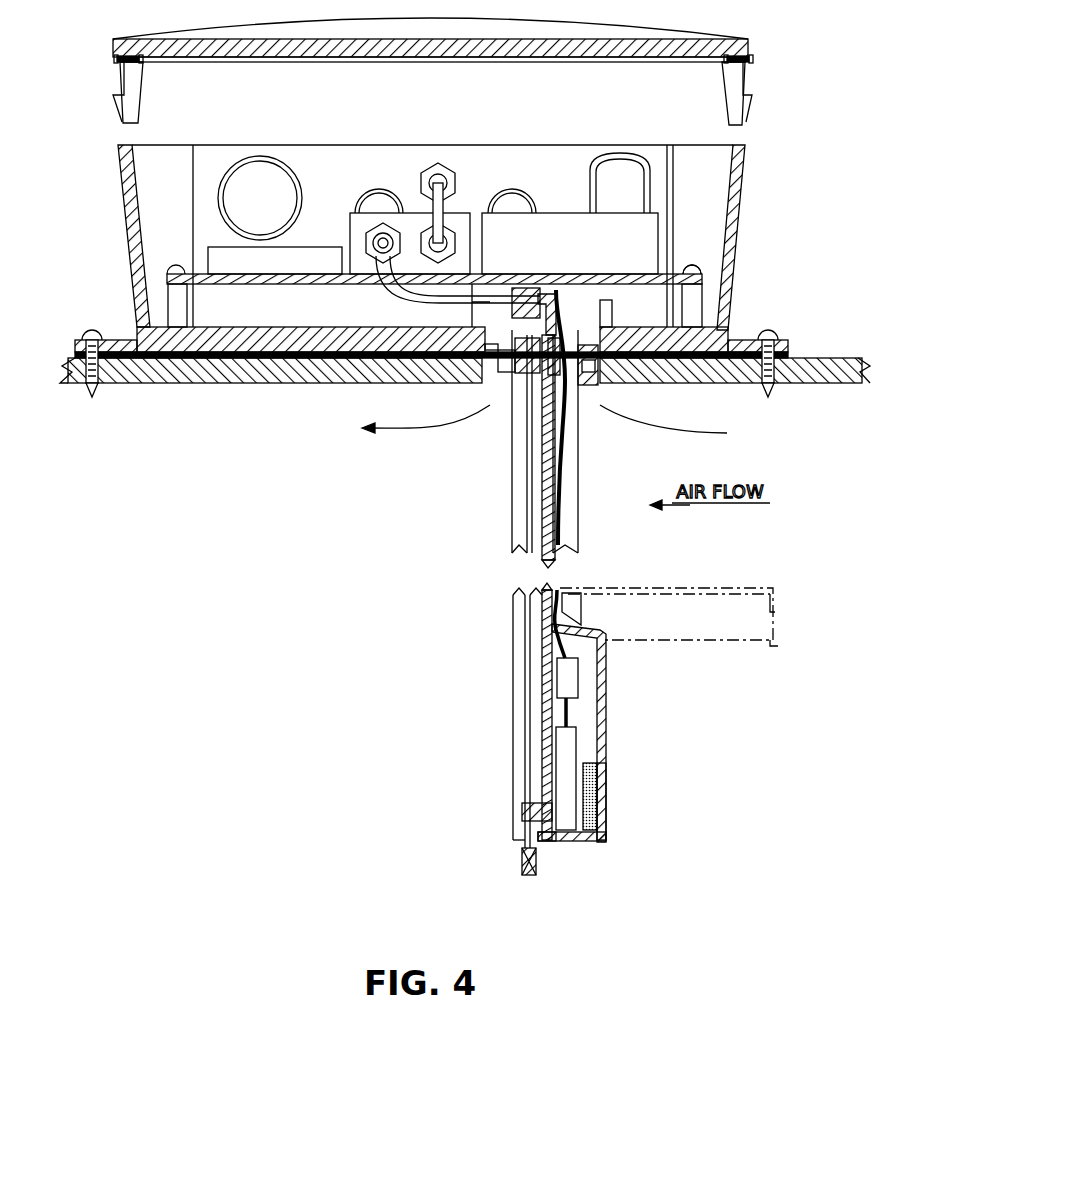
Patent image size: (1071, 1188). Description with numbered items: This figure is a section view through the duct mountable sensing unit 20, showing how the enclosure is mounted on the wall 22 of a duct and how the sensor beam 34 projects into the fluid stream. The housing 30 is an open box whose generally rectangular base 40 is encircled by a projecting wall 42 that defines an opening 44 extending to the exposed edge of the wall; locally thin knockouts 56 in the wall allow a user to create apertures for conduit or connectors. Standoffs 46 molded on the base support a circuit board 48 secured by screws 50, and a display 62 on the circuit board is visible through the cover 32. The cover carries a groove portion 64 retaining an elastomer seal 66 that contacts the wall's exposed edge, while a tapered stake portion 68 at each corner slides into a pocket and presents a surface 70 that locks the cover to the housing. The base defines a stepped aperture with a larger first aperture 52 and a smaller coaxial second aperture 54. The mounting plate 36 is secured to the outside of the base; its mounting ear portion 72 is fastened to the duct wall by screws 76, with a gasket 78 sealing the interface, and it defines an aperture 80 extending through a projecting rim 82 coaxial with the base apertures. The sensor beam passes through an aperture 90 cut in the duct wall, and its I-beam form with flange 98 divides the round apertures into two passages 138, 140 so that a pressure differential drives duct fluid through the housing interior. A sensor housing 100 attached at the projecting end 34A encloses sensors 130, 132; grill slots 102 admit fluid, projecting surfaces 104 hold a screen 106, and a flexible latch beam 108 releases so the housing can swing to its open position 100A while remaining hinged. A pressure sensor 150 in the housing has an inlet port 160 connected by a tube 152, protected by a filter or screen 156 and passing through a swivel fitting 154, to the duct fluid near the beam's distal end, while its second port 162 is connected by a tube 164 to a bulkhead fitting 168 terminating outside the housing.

The sensing unit 20 is at (332, 608).
The wall of a duct 22 is at (338, 385).
The housing 30 is at (108, 194).
The cover 32 is at (710, 38).
The sensor beam 34 is at (490, 515).
The projecting end of the sensor beam 34A is at (512, 841).
The mounting plate 36 is at (815, 341).
The base 40 is at (155, 318).
The projecting wall 42 is at (178, 145).
The opening 44 is at (388, 158).
The standoffs 46 is at (190, 314).
The circuit board 48 is at (678, 283).
The screws 50 is at (700, 274).
The first aperture 52 is at (462, 383).
The second aperture 54 is at (600, 283).
The knockouts 56 is at (262, 156).
The display 62 is at (306, 246).
The groove portion 64 is at (118, 61).
The elastomer seal 66 is at (135, 66).
The tapered stake portion 68 is at (750, 74).
The surface 70 is at (748, 102).
The mounting ear portion 72 is at (113, 342).
The screws 76 is at (97, 386).
The gasket 78 is at (78, 356).
The aperture 80 is at (587, 382).
The rim 82 is at (500, 385).
The aperture 90 is at (506, 405).
The flange 98 is at (580, 487).
The sensor housing 100 is at (604, 696).
The sensor housing open position 100A is at (733, 590).
The grill slots 102 is at (606, 812).
The projecting surfaces 104 is at (600, 775).
The screen 106 is at (576, 841).
The flexible latch beam 108 is at (560, 843).
The sensor 130 is at (580, 680).
The sensor 132 is at (578, 740).
The passage 138 is at (601, 320).
The passage 140 is at (500, 324).
The pressure sensor 150 is at (362, 200).
The tube 152 is at (522, 705).
The swivel fitting 154 is at (533, 288).
The filter or screen 156 is at (521, 878).
The inlet port 160 is at (378, 257).
The second port 162 is at (458, 241).
The tube 164 is at (450, 222).
The bulkhead fitting 168 is at (447, 165).